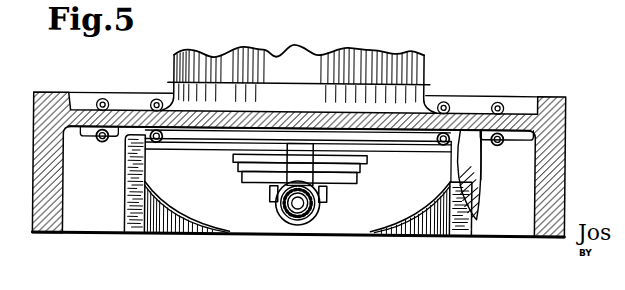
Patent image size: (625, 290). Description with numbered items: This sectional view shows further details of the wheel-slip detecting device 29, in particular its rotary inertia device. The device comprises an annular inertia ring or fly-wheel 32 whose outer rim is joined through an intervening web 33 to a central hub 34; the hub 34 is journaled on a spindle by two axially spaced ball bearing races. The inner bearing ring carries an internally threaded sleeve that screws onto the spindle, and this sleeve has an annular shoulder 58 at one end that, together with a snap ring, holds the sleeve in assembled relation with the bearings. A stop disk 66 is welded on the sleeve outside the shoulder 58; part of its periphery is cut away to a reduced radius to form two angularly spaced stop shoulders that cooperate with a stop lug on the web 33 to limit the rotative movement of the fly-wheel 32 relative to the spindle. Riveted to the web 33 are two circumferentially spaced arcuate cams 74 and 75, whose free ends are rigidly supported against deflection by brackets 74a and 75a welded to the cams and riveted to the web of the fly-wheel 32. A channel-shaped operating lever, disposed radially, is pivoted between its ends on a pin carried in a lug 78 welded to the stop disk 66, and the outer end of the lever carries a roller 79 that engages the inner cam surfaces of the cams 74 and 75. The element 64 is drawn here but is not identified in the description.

The mounting assembly 29 is at (400, 4).
The fly-wheel 32 is at (564, 117).
The web 33 is at (496, 109).
The hub 34 is at (402, 68).
The annular shoulder 58 is at (362, 174).
The stepped bracket 64 is at (362, 166).
The stop disk 66 is at (212, 146).
The arcuate cam 74 is at (172, 229).
The bracket 74a is at (127, 181).
The arcuate cam 75 is at (397, 221).
The bracket 75a is at (472, 211).
The lug 78 is at (289, 166).
The roller 79 is at (302, 226).